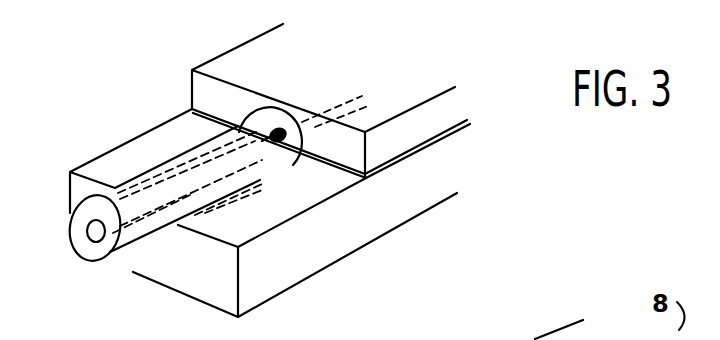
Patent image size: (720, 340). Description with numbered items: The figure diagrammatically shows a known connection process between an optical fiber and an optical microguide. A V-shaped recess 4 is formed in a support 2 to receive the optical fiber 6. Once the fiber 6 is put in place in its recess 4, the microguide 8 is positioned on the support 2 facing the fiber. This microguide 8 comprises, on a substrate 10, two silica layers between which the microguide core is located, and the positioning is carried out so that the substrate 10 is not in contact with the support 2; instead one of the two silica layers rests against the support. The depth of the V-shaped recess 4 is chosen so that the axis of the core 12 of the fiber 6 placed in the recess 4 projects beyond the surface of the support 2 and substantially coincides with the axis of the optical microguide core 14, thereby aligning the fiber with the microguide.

The support 2 is at (220, 283).
The V-shaped recess 4 is at (153, 236).
The optical fiber 6 is at (67, 232).
The microguide 8 is at (345, 85).
The substrate 10 is at (437, 91).
The core 12 is at (87, 240).
The optical microguide core 14 is at (313, 108).